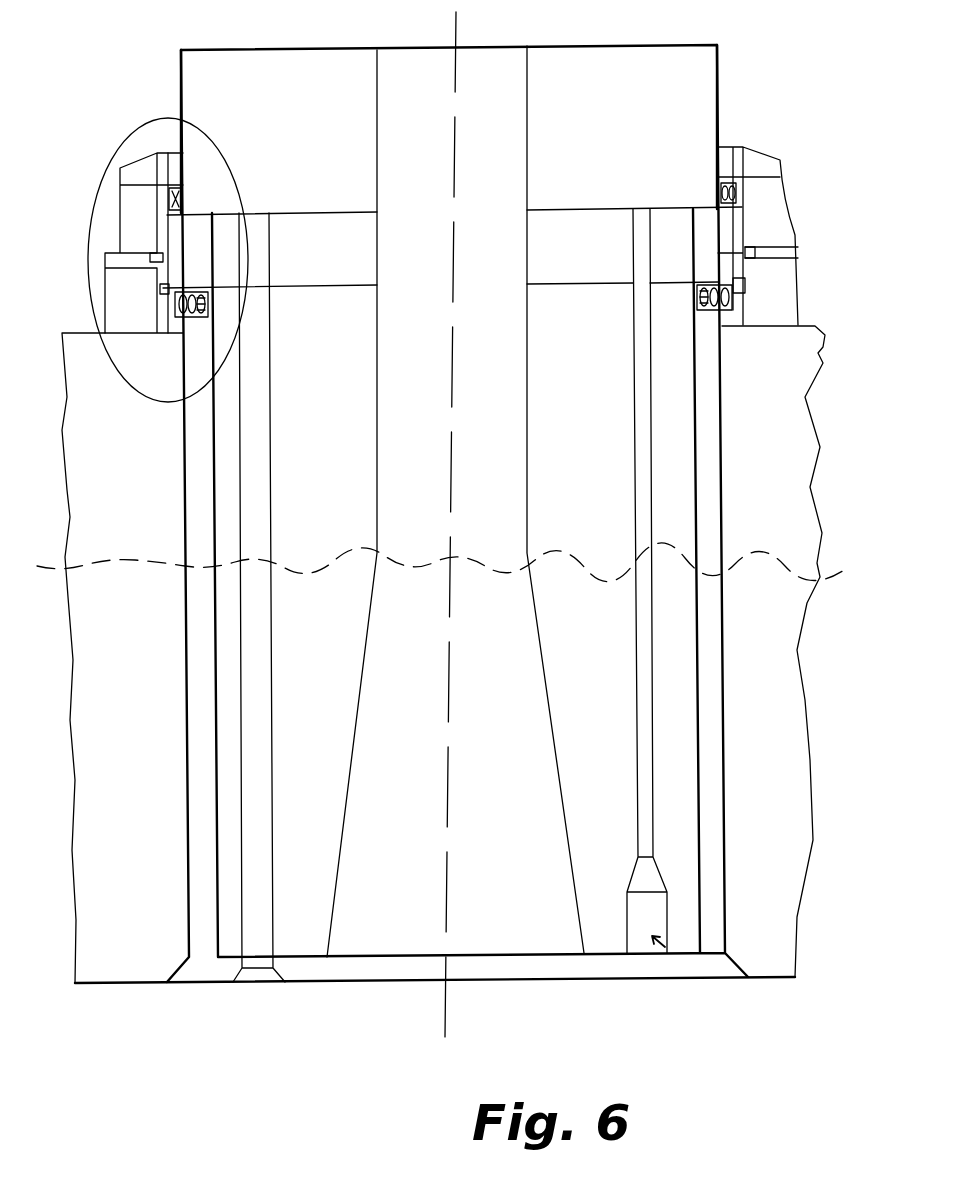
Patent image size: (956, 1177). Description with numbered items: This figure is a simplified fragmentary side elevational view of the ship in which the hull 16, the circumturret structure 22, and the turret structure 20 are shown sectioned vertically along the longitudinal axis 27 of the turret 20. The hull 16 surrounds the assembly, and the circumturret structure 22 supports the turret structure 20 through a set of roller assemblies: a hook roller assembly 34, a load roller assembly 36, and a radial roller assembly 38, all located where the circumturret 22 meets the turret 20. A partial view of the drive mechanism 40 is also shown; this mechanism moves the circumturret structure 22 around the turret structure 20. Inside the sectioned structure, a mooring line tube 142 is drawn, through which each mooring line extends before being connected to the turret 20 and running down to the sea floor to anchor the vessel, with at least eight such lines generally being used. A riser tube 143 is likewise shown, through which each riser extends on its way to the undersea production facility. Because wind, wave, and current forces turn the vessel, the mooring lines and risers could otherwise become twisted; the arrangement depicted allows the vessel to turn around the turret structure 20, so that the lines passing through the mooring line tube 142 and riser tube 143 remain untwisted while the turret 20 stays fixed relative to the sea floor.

The hull 16 is at (87, 513).
The turret structure 20 is at (214, 50).
The circumturret structure 22 is at (157, 185).
The longitudinal axis 27 is at (447, 1010).
The hook roller assembly 34 is at (183, 189).
The load roller assembly 36 is at (213, 300).
The radial roller assembly 38 is at (152, 255).
The drive mechanism 40 is at (165, 315).
The mooring line tube 142 is at (670, 953).
The riser tube 143 is at (257, 958).